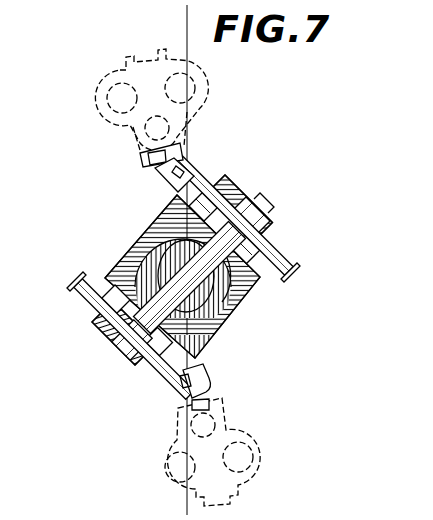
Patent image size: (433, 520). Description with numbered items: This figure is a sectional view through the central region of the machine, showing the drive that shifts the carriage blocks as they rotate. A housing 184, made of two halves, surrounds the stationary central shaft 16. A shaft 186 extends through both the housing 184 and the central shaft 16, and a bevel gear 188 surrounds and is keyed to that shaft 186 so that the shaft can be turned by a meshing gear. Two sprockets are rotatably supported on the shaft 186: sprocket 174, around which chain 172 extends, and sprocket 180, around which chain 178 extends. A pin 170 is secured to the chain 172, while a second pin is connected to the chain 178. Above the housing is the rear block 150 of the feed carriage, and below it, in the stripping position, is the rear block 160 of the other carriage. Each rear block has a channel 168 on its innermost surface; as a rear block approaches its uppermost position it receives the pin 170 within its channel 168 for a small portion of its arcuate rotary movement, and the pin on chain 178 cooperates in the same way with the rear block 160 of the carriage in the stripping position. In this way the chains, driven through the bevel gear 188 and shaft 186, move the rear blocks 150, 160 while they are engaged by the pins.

The central shaft 16 is at (148, 242).
The rear block 150 is at (213, 80).
The rear block 160 is at (268, 442).
The channel 168 is at (146, 162).
The pin 170 is at (185, 152).
The chain 172 is at (296, 264).
The sprocket 174 is at (274, 250).
The chain 178 is at (67, 286).
The sprocket 180 is at (84, 306).
The housing 184 is at (246, 294).
The shaft 186 is at (250, 206).
The bevel gear 188 is at (203, 329).